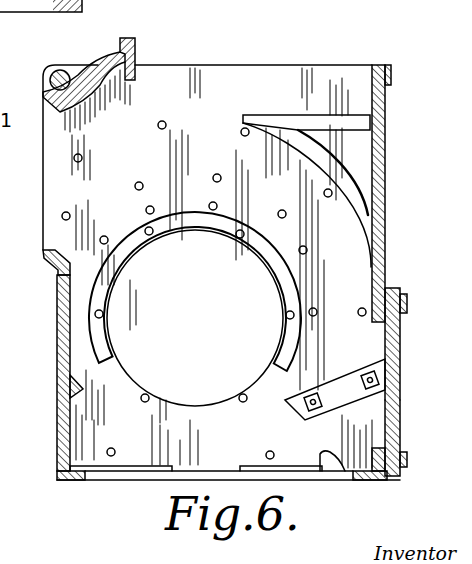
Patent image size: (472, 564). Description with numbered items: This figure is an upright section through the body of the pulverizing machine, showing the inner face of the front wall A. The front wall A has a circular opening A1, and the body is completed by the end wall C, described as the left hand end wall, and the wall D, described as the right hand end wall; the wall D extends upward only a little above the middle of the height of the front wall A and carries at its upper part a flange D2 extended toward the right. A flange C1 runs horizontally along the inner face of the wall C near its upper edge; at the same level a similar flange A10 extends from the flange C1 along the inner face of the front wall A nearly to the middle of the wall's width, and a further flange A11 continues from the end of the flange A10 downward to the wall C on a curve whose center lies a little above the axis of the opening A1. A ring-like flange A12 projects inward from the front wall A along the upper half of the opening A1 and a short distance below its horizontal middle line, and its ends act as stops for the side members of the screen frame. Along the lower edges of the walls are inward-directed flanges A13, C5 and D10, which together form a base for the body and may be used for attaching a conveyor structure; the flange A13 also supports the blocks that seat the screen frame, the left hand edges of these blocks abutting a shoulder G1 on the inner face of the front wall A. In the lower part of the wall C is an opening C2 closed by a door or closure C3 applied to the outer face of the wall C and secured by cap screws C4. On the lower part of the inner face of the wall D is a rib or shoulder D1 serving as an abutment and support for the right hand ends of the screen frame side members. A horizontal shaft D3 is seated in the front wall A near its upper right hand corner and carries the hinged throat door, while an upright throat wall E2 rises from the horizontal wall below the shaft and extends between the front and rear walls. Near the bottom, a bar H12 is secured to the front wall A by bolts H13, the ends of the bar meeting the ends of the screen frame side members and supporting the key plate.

The front wall A is at (245, 72).
The circular opening A1 is at (208, 318).
The flange A10 is at (310, 117).
The flange A11 is at (355, 202).
The flange A12 is at (122, 260).
The inward-directed flange A13 is at (333, 481).
The left hand end wall C is at (383, 247).
The flange C1 is at (370, 118).
The opening C2 is at (375, 343).
The door or closure C3 is at (397, 418).
The cap screws C4 is at (407, 297).
The inward-directed flange C5 is at (354, 483).
The right hand end wall D is at (57, 357).
The rib or shoulder D1 is at (68, 392).
The flange D2 is at (50, 271).
The horizontal shaft D3 is at (50, 77).
The inward-directed flange D10 is at (78, 481).
The upright wall E2 is at (115, 52).
The shoulder G1 is at (320, 457).
The bar H12 is at (332, 404).
The bolts H13 is at (345, 358).